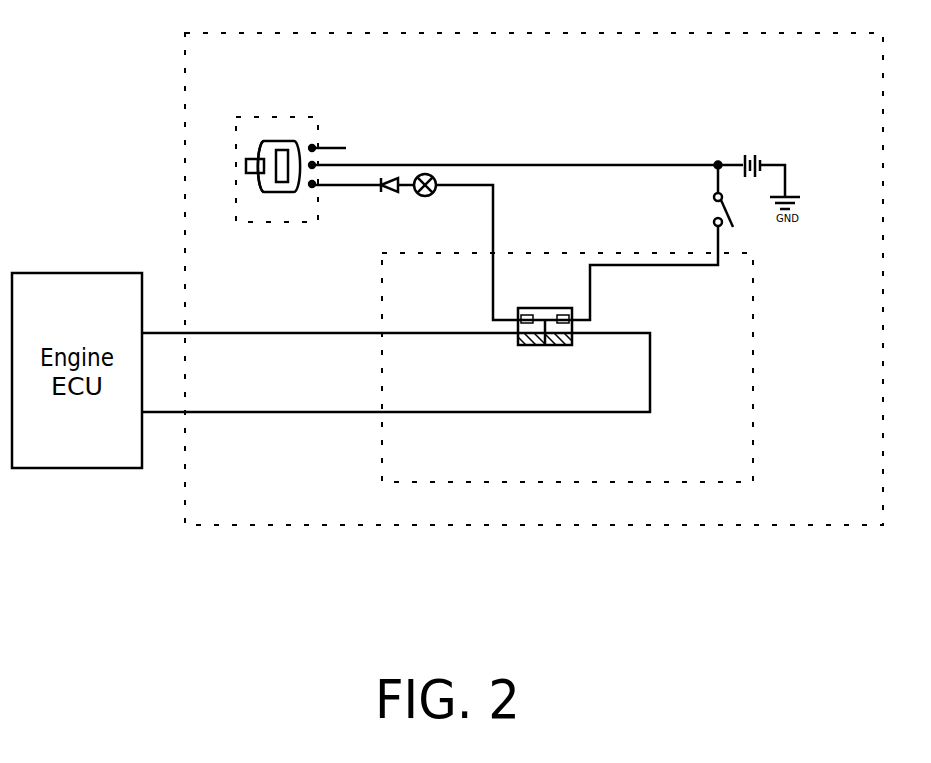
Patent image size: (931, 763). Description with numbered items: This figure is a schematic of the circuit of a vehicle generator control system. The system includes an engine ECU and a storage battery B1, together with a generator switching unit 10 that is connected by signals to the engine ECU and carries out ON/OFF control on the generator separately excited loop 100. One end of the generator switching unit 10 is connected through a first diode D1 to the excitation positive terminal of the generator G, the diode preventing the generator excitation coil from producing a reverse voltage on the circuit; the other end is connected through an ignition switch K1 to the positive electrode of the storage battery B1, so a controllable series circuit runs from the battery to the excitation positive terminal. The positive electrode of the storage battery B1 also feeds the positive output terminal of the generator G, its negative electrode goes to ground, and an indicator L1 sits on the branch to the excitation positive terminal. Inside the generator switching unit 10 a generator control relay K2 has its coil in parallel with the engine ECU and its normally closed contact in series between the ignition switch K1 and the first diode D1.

The generator separately excited loop 100 is at (534, 279).
The generator switching unit 10 is at (567, 367).
The generator G is at (489, 169).
The first diode D1 is at (397, 194).
The indicator L1 is at (425, 192).
The ignition switch K1 is at (712, 195).
The storage battery B1 is at (751, 157).
The generator control relay K2 is at (545, 317).